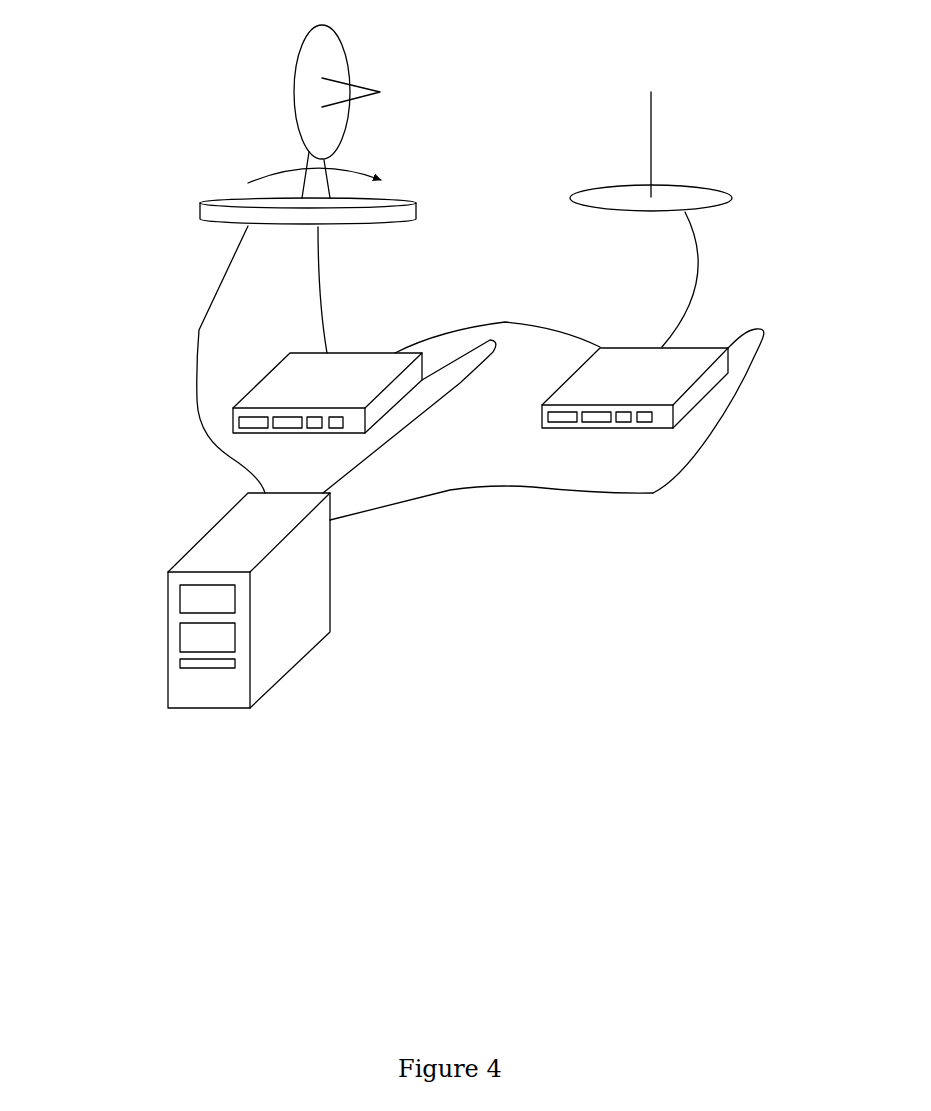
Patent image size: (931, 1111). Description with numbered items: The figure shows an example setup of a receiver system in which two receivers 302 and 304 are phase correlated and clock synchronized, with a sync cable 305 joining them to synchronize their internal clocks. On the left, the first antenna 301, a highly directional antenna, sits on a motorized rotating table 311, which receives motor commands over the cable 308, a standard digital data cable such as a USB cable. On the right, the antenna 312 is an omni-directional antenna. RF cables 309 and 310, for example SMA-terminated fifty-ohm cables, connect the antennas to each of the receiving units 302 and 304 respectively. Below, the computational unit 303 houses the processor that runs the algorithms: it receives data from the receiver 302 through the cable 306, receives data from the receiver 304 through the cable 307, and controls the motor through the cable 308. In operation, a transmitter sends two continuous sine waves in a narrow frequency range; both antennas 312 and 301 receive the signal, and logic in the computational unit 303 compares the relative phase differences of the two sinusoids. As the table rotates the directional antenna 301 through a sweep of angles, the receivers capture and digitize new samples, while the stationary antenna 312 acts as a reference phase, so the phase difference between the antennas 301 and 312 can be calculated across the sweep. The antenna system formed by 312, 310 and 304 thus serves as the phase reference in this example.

The first antenna 301 is at (292, 117).
The receiver 302 is at (350, 347).
The computational unit 303 is at (167, 650).
The receiver 304 is at (621, 344).
The sync cable 305 is at (445, 321).
The cable 306 is at (404, 435).
The cable 307 is at (717, 445).
The cable 308 is at (192, 423).
The RF cable 309 is at (317, 250).
The RF cable 310 is at (708, 243).
The motorized rotating table 311 is at (198, 226).
The antenna 312 is at (660, 127).